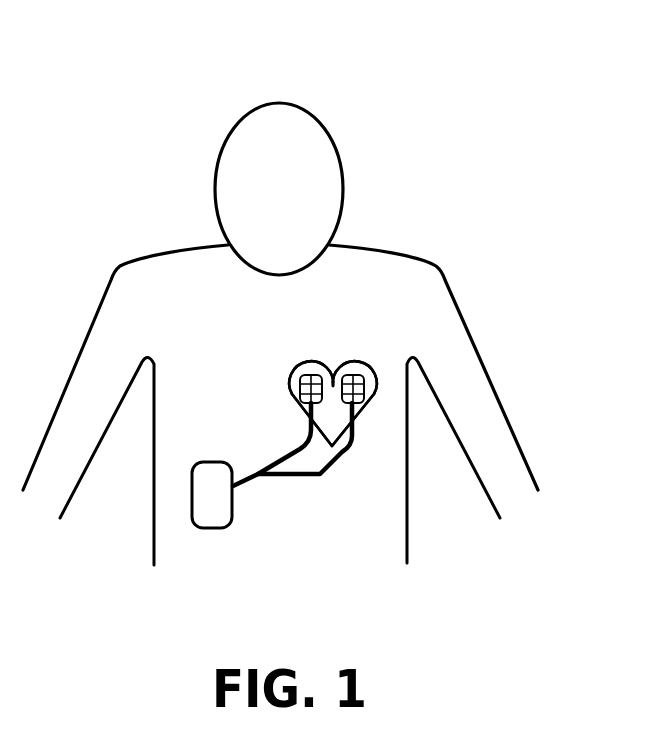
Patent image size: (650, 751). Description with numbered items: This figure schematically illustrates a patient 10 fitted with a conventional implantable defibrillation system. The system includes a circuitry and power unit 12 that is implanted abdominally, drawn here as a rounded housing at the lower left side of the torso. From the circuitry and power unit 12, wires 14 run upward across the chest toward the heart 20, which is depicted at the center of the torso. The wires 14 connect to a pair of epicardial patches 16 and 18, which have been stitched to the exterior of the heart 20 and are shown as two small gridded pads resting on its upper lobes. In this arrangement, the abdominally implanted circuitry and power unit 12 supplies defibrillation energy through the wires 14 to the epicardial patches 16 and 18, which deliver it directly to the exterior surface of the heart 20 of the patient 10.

The patient 10 is at (460, 127).
The circuitry and power unit 12 is at (193, 503).
The wires 14 is at (245, 479).
The epicardial patch 16 is at (307, 375).
The epicardial patch 18 is at (363, 377).
The heart 20 is at (363, 413).